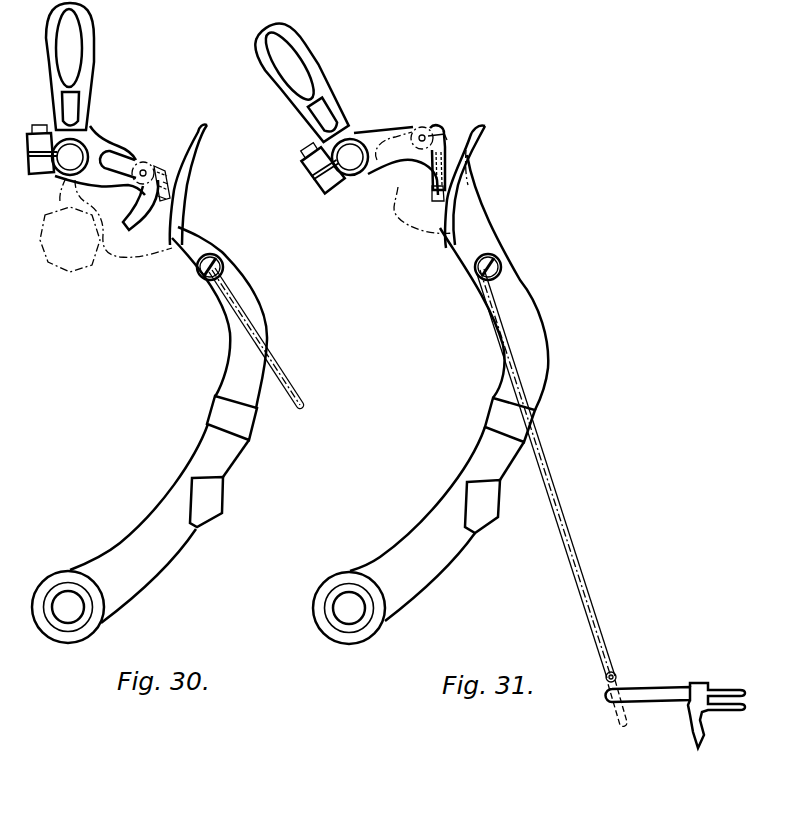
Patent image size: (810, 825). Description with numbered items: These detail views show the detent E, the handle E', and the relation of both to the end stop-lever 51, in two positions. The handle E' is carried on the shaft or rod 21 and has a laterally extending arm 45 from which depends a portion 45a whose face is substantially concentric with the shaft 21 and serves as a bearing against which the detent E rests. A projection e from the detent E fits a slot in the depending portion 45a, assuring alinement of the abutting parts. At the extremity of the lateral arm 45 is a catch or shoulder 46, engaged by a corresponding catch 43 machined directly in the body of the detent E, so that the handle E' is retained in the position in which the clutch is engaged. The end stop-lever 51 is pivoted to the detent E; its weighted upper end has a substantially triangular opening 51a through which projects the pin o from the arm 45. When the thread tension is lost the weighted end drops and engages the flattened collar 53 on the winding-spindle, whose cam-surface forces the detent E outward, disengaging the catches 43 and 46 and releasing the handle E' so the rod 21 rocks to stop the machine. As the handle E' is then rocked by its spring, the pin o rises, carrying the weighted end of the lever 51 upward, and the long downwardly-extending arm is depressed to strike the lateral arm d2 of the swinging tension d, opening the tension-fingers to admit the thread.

In FIG. 30, the handle E' is at (91, 66).
In FIG. 31, the handle E' is at (304, 81).
In FIG. 30, the shaft or rod 21 is at (57, 150).
In FIG. 31, the shaft or rod 21 is at (336, 157).
In FIG. 30, the lateral arm 45 is at (108, 160).
In FIG. 31, the lateral arm 45 is at (426, 125).
In FIG. 30, the triangular opening 51a is at (147, 169).
In FIG. 31, the triangular opening 51a is at (438, 133).
In FIG. 30, the pin o is at (150, 170).
In FIG. 31, the pin o is at (418, 130).
In FIG. 30, the catch 43 is at (168, 173).
In FIG. 31, the catch 43 is at (445, 175).
In FIG. 30, the catch or shoulder 46 is at (165, 182).
In FIG. 31, the catch or shoulder 46 is at (442, 130).
In FIG. 30, the projection e is at (163, 198).
In FIG. 31, the projection e is at (441, 200).
In FIG. 30, the depending portion 45a is at (134, 232).
In FIG. 31, the depending portion 45a is at (437, 193).
In FIG. 30, the collar 53 is at (78, 265).
In FIG. 30, the end stop-lever 51 is at (289, 372).
In FIG. 31, the end stop-lever 51 is at (553, 470).
In FIG. 30, the detent E is at (149, 435).
In FIG. 31, the detent E is at (430, 399).
In FIG. 31, the swinging tension d is at (738, 689).
In FIG. 31, the lateral arm d2 is at (663, 698).